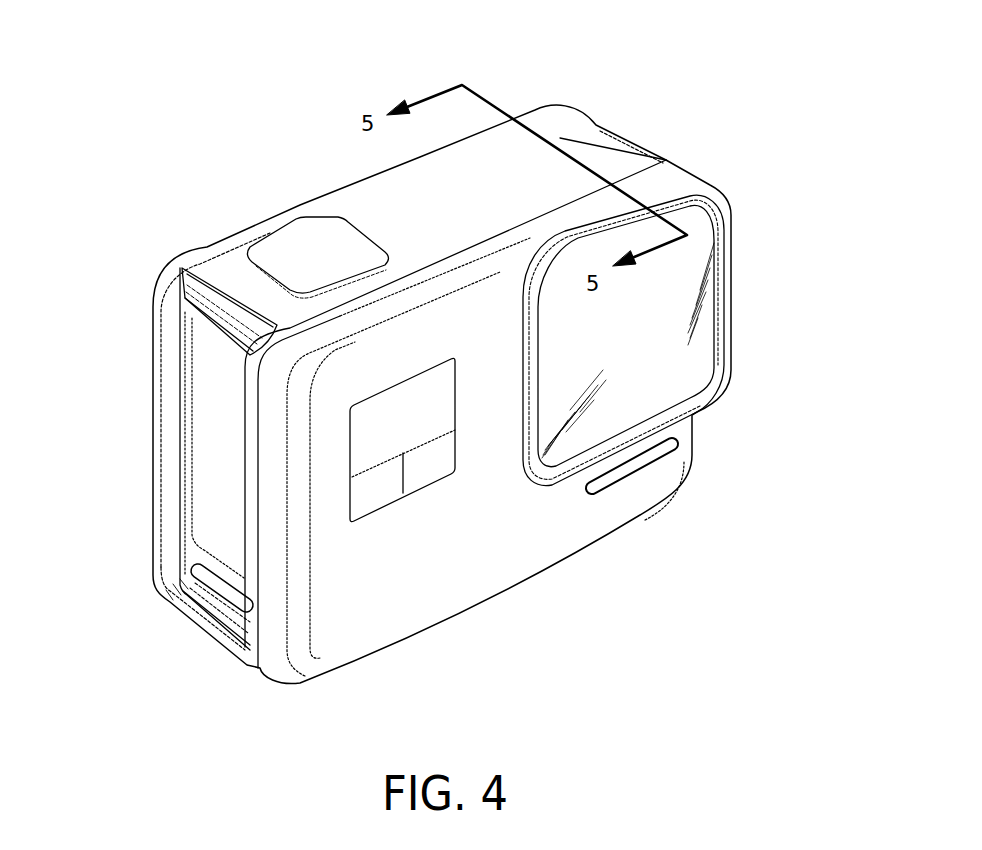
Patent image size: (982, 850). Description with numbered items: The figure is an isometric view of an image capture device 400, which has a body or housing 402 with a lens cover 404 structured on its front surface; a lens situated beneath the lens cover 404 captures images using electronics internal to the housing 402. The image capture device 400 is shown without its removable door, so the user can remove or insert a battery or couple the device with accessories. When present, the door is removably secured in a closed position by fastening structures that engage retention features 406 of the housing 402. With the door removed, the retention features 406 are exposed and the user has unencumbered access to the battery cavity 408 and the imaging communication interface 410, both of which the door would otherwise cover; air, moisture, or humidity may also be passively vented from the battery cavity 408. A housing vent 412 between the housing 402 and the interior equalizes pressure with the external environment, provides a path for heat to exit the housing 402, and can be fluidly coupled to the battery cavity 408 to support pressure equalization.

The image capture device 400 is at (720, 72).
The housing 402 is at (578, 133).
The lens cover 404 is at (688, 309).
The retention features 406 is at (183, 303).
The battery cavity 408 is at (212, 433).
The imaging communication interface 410 is at (196, 571).
The housing vent 412 is at (677, 445).